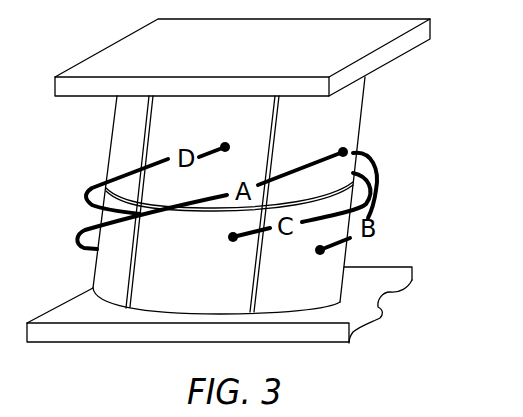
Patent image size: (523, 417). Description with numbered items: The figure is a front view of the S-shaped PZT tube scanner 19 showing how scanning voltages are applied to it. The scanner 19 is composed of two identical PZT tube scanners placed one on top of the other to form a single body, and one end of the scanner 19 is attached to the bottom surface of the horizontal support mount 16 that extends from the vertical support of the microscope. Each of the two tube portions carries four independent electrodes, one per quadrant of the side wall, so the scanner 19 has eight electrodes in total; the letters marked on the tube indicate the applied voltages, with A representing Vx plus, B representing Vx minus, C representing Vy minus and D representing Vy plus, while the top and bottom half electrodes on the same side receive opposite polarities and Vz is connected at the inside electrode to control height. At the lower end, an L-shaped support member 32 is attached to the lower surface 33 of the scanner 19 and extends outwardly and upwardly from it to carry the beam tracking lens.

The support mount 16 is at (422, 35).
The PZT tube scanner 19 is at (352, 125).
The L-shaped support member 32 is at (412, 281).
The lower surface 33 is at (318, 306).